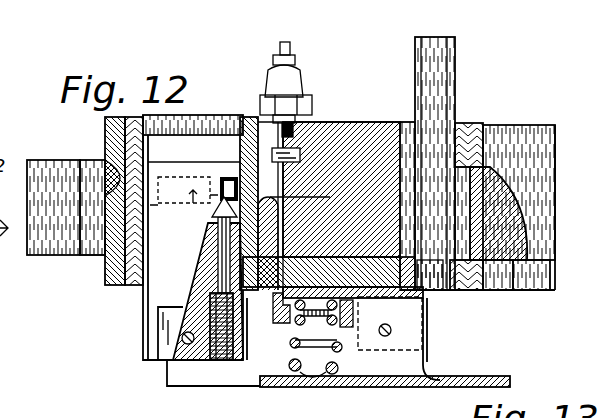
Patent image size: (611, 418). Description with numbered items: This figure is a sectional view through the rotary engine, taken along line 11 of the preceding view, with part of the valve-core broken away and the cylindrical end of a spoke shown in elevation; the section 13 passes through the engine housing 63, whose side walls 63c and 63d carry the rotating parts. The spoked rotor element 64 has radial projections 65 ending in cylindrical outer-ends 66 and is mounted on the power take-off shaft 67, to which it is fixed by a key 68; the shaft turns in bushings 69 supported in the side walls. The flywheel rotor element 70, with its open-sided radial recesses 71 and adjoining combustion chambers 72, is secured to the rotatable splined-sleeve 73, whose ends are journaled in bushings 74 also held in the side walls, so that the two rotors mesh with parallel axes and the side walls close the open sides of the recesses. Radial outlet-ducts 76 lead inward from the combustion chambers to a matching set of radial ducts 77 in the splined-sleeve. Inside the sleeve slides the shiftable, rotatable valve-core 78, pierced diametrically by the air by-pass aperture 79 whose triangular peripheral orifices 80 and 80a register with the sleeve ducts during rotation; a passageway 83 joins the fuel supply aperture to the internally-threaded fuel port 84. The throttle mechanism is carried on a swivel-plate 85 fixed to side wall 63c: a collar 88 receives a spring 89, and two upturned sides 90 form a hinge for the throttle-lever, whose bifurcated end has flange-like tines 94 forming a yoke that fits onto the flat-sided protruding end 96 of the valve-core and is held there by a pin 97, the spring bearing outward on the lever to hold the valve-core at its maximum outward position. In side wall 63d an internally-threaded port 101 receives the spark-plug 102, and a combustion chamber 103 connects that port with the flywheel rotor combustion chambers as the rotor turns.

The mechanism assembly 11 is at (28, 297).
The housing block 13 is at (321, 205).
The engine housing 63 is at (95, 286).
The side wall 63c is at (545, 293).
The side wall 63d is at (375, 123).
The spoked rotor element 64 is at (393, 123).
The radial projections 65 is at (500, 140).
The cylindrical outer-ends 66 is at (572, 155).
The power take-off shaft 67 is at (456, 97).
The key 68 is at (507, 280).
The bushings 69 is at (463, 125).
The flywheel rotor element 70 is at (36, 160).
The radial recesses 71 is at (52, 254).
The combustion chambers 72 is at (115, 188).
The splined-sleeve 73 is at (194, 116).
The bushings 74 is at (130, 117).
The radial outlet-ducts 76 is at (113, 172).
The radial ducts 77 is at (250, 120).
The valve-core 78 is at (140, 320).
The air by-pass aperture 79 is at (160, 204).
The orifice 80 is at (222, 180).
The orifice 80a is at (184, 190).
The passageway 83 is at (240, 297).
The fuel port 84 is at (228, 362).
The swivel-plate 85 is at (425, 292).
The collar 88 is at (285, 310).
The spring 89 is at (343, 350).
The upturned sides 90 is at (390, 325).
The tines 94 is at (180, 387).
The protruding end 96 is at (160, 325).
The pin 97 is at (183, 345).
The port 101 is at (300, 152).
The spark-plug 102 is at (292, 80).
The combustion chamber 103 is at (303, 142).